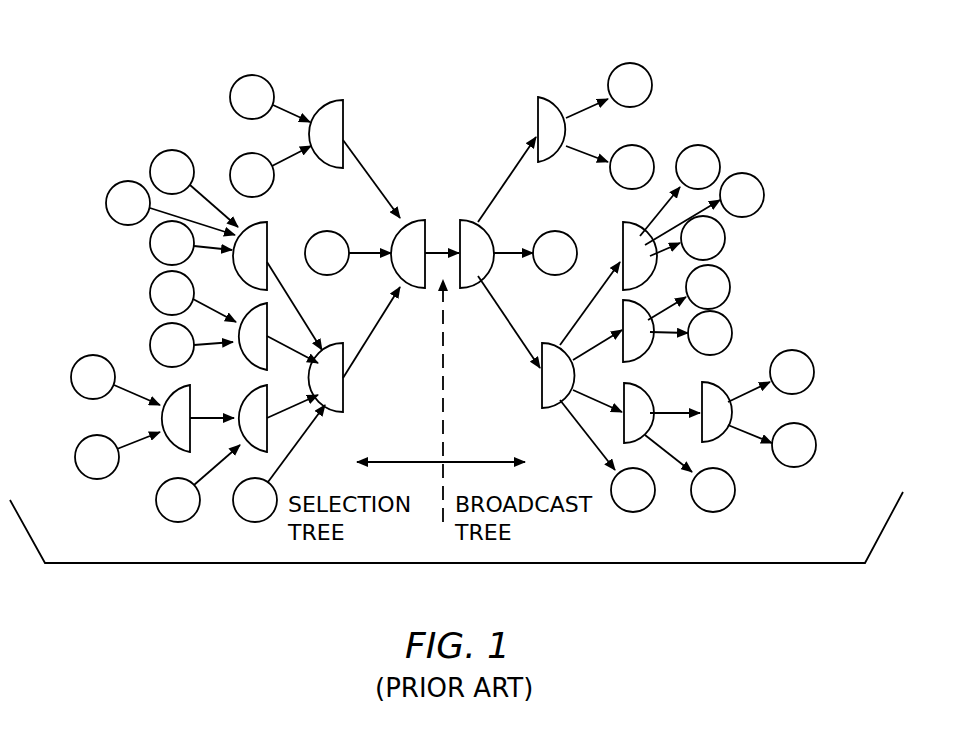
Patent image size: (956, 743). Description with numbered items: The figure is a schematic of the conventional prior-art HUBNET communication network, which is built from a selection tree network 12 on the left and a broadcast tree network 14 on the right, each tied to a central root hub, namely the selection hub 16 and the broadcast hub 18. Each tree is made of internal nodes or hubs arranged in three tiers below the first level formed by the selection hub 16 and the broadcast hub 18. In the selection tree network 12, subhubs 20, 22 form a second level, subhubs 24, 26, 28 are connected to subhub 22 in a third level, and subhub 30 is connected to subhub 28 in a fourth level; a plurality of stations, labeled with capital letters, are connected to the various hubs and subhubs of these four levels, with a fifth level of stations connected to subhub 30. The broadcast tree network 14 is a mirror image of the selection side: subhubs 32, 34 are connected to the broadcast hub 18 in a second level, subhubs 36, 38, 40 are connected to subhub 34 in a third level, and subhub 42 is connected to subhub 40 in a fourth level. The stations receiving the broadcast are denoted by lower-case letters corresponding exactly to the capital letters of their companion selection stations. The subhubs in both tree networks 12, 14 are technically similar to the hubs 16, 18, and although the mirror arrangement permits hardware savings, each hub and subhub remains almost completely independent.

The selection tree network 12 is at (152, 60).
The broadcast tree network 14 is at (580, 66).
The selection hub 16 is at (423, 222).
The broadcast hub 18 is at (492, 242).
The subhub 20 is at (345, 106).
The subhub 22 is at (350, 389).
The subhub 24 is at (268, 234).
The subhub 26 is at (248, 308).
The subhub 28 is at (244, 428).
The subhub 30 is at (193, 396).
The subhub 32 is at (537, 116).
The subhub 34 is at (540, 380).
The subhub 36 is at (620, 238).
The subhub 38 is at (623, 322).
The subhub 40 is at (623, 400).
The subhub 42 is at (701, 395).